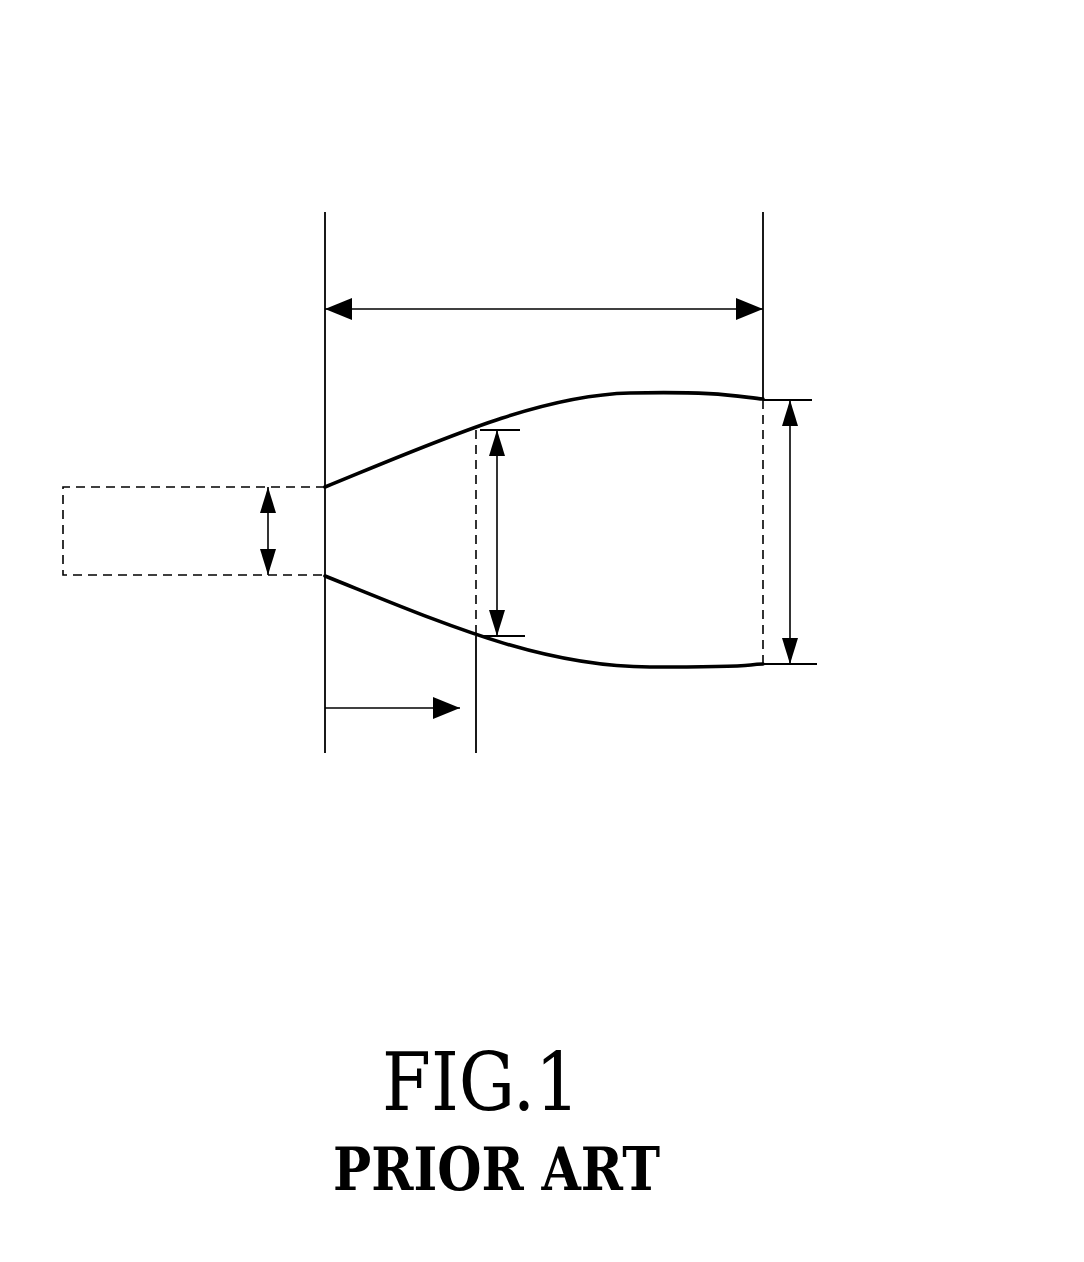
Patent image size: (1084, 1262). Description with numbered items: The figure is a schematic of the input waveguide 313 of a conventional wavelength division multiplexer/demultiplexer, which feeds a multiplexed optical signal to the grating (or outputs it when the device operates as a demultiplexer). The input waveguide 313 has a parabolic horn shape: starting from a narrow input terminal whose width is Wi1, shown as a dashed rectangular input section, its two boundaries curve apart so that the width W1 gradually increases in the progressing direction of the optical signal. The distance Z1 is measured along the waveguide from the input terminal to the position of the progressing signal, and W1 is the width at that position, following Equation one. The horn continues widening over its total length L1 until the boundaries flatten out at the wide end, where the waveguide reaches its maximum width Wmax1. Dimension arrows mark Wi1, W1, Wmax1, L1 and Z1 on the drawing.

The input waveguide 313 is at (812, 38).
The taper length L1 is at (547, 309).
The width at the input terminal Wi1 is at (266, 534).
The width at the position of the progressing optical signal W1 is at (498, 535).
The maximum width Wmax1 is at (791, 531).
The distance from the input terminal Z1 is at (392, 724).